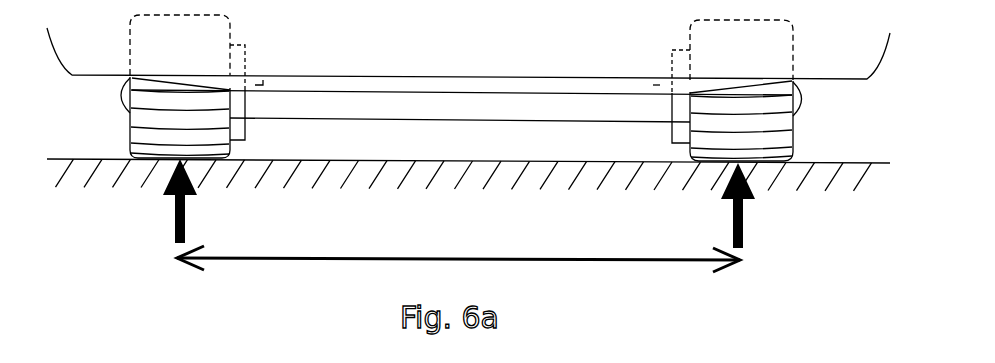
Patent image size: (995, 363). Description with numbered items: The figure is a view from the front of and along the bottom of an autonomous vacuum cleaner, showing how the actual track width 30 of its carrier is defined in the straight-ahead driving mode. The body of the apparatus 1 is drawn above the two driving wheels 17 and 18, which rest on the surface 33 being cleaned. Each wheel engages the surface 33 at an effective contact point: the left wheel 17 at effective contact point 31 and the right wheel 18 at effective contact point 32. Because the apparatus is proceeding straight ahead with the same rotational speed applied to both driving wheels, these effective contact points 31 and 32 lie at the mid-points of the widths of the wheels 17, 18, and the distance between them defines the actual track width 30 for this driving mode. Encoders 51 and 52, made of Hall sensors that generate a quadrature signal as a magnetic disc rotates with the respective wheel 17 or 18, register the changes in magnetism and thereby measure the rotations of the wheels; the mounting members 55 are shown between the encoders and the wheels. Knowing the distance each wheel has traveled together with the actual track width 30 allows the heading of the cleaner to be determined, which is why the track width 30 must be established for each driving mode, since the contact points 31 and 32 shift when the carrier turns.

The vehicle body 1 is at (849, 68).
The wheel 17 is at (140, 140).
The wheel 18 is at (780, 136).
The actual track width 30 is at (628, 260).
The effective contact point 31 is at (160, 164).
The effective contact point 32 is at (748, 166).
The surface 33 is at (87, 161).
The encoder 51 is at (250, 62).
The encoder 52 is at (660, 63).
The sensor mounting bracket 55 is at (240, 102).